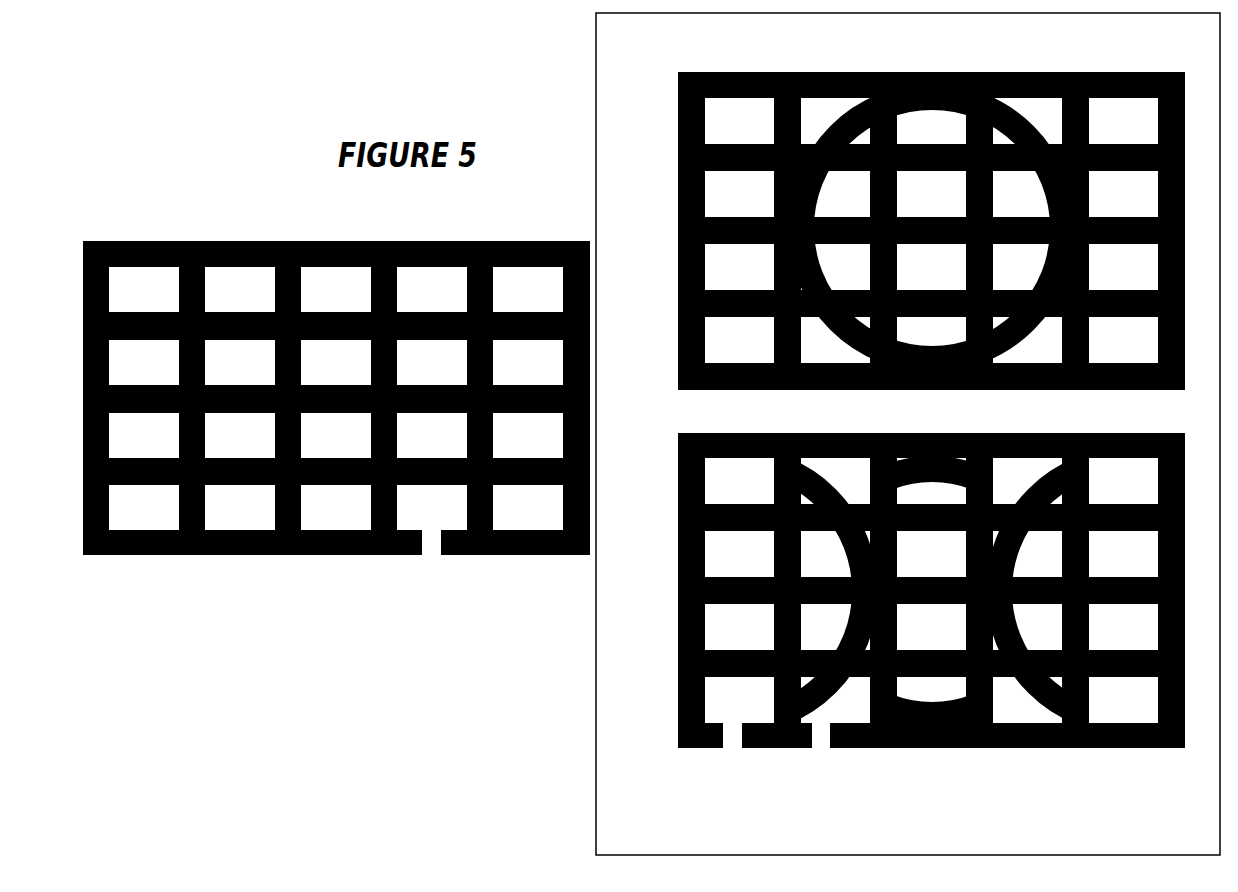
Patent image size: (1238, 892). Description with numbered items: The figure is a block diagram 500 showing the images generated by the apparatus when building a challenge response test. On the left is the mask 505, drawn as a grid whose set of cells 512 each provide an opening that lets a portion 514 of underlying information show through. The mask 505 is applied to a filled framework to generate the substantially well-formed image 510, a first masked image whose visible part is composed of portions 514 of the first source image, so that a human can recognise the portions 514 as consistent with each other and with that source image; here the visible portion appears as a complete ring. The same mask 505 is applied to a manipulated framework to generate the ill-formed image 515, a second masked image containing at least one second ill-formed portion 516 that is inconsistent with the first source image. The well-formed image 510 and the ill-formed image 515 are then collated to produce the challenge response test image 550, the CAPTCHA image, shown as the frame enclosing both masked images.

The block diagram 500 is at (357, 735).
The mask 505 is at (336, 437).
The substantially well-formed image 510 is at (898, 205).
The cells 512 is at (432, 513).
The portion of underlying information 514 is at (847, 110).
The ill-formed image 515 is at (920, 633).
The second ill-formed portion 516 is at (819, 714).
The challenge response test image 550 is at (596, 663).